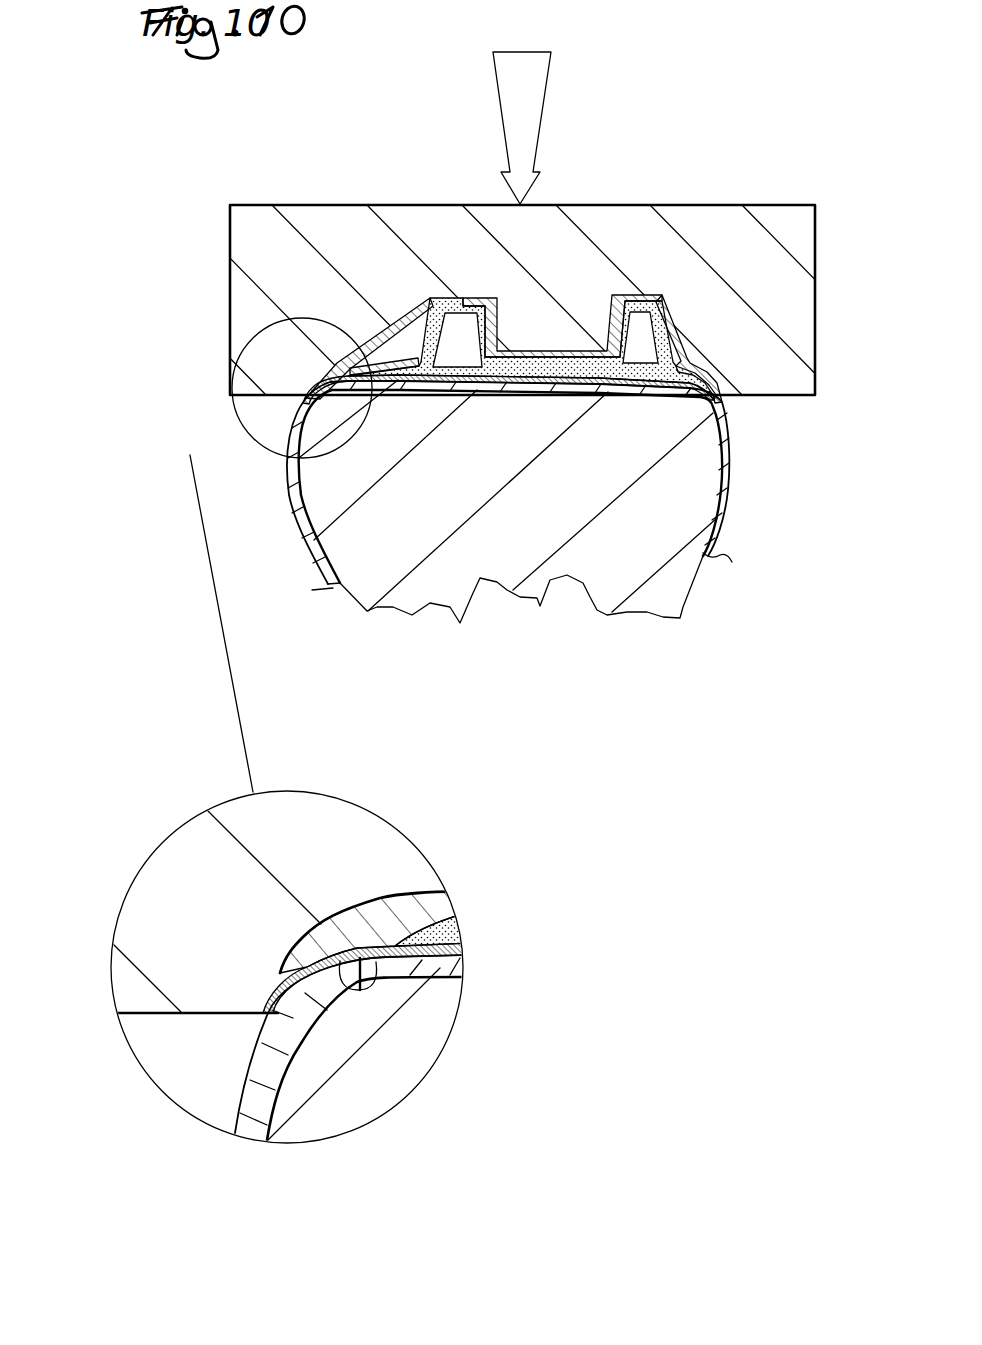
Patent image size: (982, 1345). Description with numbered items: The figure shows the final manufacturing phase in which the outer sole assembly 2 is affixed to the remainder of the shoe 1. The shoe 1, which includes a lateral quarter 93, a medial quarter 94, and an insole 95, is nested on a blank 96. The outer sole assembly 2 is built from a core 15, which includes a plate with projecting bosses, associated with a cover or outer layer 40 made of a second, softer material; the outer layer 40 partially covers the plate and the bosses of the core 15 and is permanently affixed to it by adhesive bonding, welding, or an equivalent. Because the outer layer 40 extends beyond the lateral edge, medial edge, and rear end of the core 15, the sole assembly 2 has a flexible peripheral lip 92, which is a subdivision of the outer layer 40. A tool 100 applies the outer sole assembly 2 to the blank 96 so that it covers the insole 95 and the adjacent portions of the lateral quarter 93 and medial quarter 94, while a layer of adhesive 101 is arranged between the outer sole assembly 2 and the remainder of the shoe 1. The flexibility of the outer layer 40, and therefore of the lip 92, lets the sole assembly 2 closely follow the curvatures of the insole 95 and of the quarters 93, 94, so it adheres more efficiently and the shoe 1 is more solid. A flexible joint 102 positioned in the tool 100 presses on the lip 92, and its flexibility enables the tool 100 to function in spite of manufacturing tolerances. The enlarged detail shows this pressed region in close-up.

The shoe 1 is at (680, 670).
The outer sole assembly 2 is at (505, 316).
The core 15 is at (590, 375).
The outer layer 40 is at (567, 372).
The peripheral lip 92 is at (342, 927).
The lateral quarter 93 is at (307, 536).
The medial quarter 94 is at (715, 530).
The insole 95 is at (647, 387).
The blank 96 is at (513, 552).
The tool 100 is at (317, 205).
The layer of adhesive 101 is at (570, 392).
The flexible joint 102 is at (243, 993).